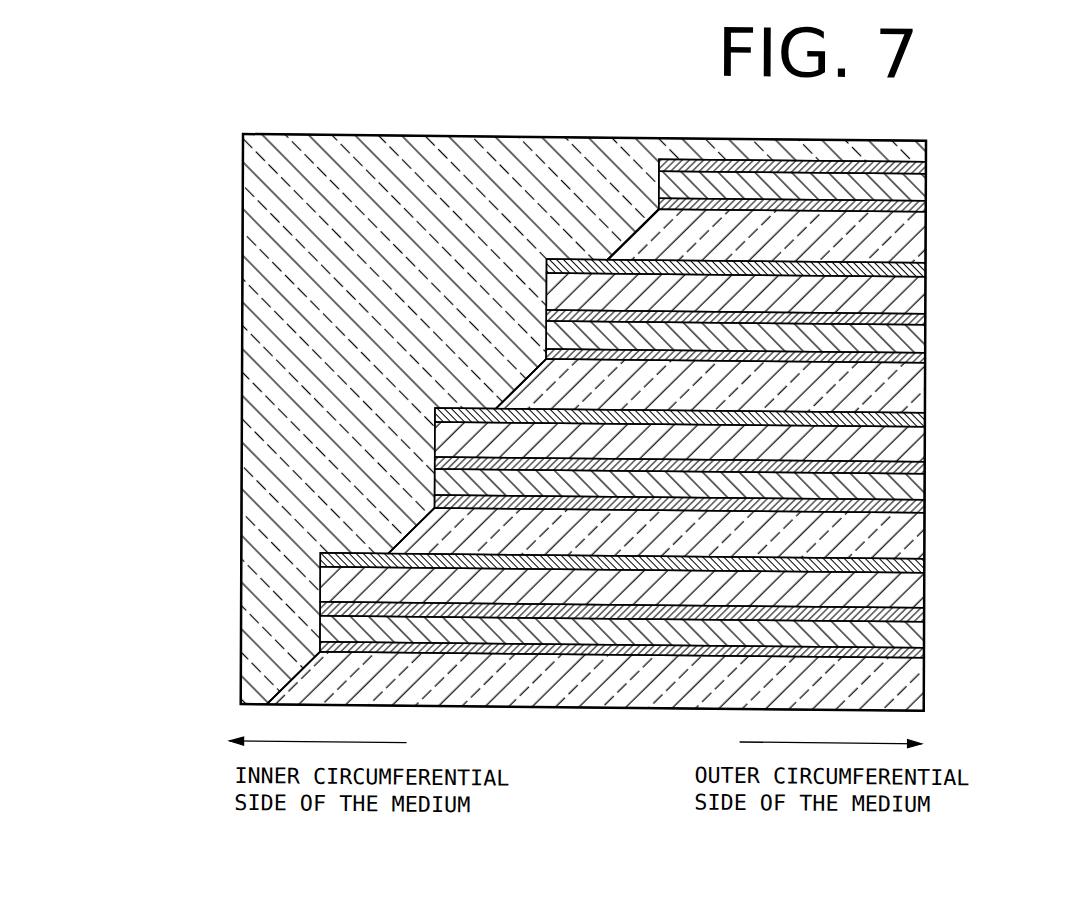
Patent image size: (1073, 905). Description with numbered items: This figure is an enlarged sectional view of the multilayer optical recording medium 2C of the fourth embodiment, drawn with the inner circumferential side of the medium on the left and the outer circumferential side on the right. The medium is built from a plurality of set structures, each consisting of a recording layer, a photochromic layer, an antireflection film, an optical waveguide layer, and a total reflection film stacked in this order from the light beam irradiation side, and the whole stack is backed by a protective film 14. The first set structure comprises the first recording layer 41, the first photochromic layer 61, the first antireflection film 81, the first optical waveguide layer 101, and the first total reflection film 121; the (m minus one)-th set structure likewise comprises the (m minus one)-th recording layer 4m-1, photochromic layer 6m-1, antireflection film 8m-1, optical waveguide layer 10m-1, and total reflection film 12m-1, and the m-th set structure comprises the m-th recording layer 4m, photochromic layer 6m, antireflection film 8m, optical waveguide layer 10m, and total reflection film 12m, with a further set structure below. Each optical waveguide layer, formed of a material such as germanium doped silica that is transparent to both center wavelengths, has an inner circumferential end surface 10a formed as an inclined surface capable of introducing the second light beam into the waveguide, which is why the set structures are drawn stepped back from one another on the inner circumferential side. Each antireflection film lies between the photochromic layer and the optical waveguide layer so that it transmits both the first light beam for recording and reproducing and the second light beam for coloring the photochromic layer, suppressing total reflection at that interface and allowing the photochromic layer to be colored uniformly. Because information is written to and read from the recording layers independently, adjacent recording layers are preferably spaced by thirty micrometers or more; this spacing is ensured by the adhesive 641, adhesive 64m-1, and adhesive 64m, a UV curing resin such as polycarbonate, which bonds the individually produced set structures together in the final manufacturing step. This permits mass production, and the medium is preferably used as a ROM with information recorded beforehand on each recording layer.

The protective film 14 is at (467, 134).
The multilayer optical recording medium 2C is at (594, 128).
The inner circumferential end surface 10a is at (629, 225).
The first recording layer 41 is at (926, 160).
The first photochromic layer 61 is at (926, 183).
The first antireflection film 81 is at (926, 200).
The first optical waveguide layer 101 is at (912, 226).
The first total reflection film 121 is at (926, 265).
The adhesive 641 is at (919, 286).
The (m−1)-th recording layer 4m-1 is at (926, 313).
The (m−1)-th photochromic layer 6m-1 is at (926, 336).
The (m−1)-th antireflection film 8m-1 is at (926, 351).
The (m−1)-th optical waveguide layer 10m-1 is at (902, 378).
The (m−1)-th total reflection film 12m-1 is at (926, 412).
The adhesive 64m-1 is at (926, 439).
The m-th recording layer 4m is at (926, 461).
The m-th photochromic layer 6m is at (926, 483).
The m-th antireflection film 8m is at (926, 501).
The m-th optical waveguide layer 10m is at (894, 528).
The m-th total reflection film 12m is at (926, 559).
The adhesive 64m is at (915, 583).